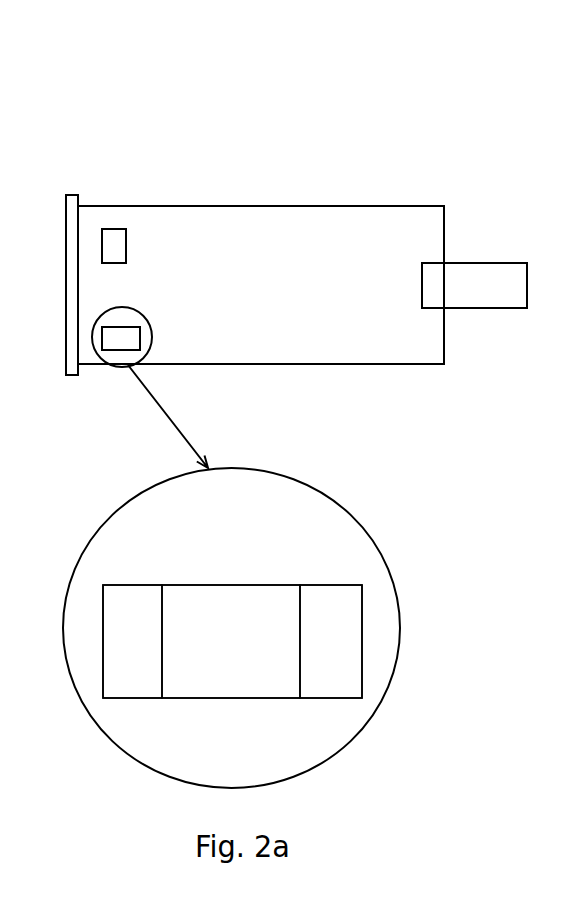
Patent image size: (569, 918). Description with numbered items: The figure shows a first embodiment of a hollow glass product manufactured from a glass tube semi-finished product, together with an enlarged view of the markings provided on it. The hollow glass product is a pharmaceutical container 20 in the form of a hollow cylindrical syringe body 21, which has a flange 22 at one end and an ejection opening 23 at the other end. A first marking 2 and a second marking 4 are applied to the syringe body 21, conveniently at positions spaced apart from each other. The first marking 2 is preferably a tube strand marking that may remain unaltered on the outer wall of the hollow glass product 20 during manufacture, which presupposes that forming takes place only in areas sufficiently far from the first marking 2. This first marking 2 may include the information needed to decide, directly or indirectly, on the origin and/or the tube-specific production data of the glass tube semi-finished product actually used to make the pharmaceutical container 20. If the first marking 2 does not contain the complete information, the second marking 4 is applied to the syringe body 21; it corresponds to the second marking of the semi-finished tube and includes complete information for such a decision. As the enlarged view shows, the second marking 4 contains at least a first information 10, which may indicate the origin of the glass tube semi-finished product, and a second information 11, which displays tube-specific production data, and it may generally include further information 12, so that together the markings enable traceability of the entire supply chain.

The pharmaceutical container 20 is at (153, 107).
The syringe body 21 is at (268, 207).
The flange 22 is at (67, 205).
The ejection opening 23 is at (503, 285).
The first marking 2 is at (114, 242).
The second marking 4 is at (124, 340).
The first information 10 is at (132, 680).
The second information 11 is at (237, 680).
The further information 12 is at (327, 680).